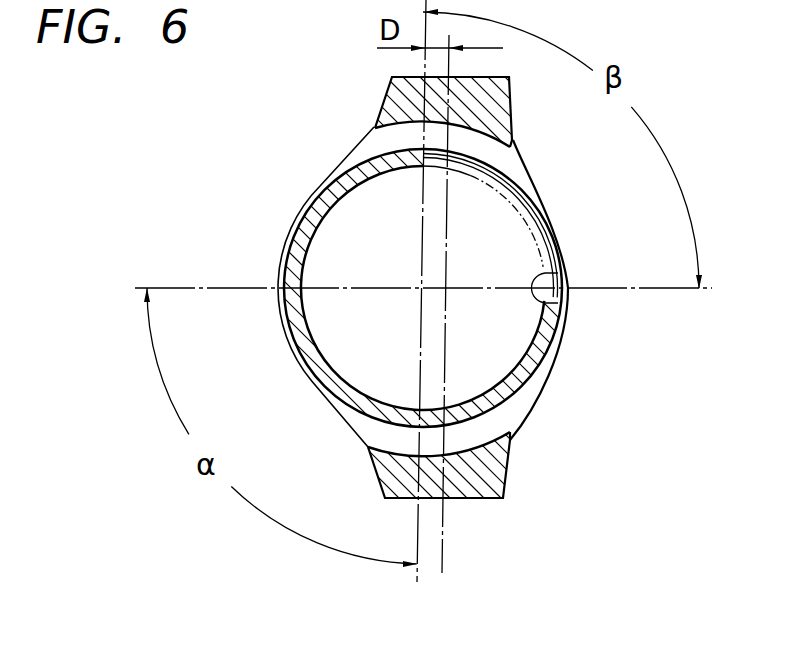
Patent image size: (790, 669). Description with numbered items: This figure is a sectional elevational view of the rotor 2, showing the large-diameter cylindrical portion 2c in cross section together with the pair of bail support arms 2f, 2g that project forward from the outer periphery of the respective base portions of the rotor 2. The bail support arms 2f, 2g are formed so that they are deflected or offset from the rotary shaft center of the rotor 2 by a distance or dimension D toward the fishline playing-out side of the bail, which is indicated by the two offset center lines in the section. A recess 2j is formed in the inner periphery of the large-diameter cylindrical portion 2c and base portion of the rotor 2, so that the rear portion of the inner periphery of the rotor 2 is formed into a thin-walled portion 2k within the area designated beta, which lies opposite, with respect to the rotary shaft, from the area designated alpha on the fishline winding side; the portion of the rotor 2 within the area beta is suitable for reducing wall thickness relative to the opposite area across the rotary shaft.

The rotor 2 is at (347, 153).
The large-diameter cylindrical portion 2c is at (302, 212).
The bail support arm 2f is at (502, 463).
The bail support arm 2g is at (383, 105).
The recess 2j is at (560, 320).
The thin-walled portion 2k is at (553, 272).